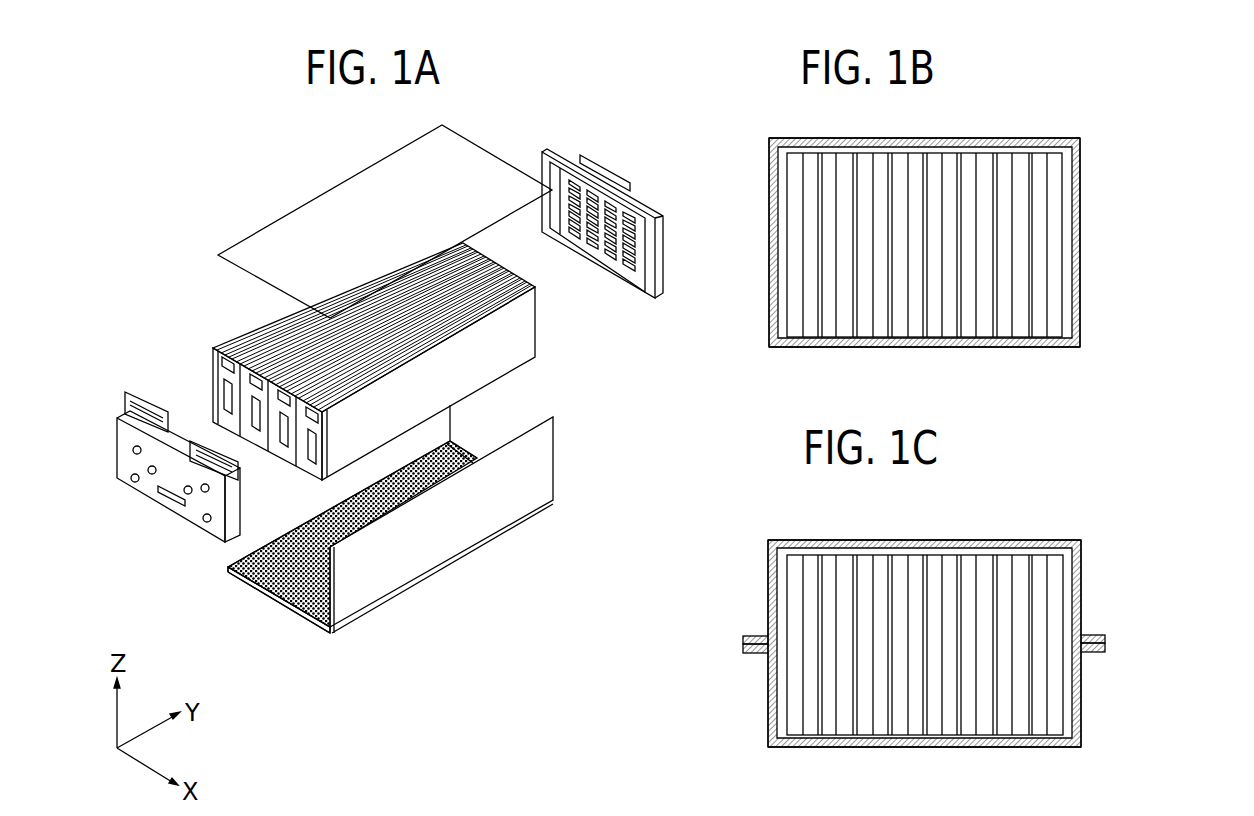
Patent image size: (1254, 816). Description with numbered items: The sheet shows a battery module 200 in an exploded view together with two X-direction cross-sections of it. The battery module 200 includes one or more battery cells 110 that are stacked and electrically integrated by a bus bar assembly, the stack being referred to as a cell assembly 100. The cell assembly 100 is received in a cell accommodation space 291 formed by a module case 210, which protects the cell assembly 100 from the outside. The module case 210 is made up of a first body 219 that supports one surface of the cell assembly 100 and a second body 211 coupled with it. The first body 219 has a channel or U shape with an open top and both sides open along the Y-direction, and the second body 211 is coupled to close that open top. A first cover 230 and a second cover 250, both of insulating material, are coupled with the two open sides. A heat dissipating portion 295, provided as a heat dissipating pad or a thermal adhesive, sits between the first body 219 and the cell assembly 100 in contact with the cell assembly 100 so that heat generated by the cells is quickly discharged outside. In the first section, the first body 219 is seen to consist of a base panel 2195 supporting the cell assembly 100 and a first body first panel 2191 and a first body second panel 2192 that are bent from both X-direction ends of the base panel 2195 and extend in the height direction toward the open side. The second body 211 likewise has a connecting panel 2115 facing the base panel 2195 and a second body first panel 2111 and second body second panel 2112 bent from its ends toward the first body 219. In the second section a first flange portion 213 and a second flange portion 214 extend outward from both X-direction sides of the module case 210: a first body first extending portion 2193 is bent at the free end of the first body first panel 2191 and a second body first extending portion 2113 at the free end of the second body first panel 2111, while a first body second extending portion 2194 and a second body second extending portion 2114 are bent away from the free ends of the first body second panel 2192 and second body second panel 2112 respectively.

In FIG. 1A, the cell assembly 100 is at (230, 314).
In FIG. 1A, the battery cells 110 is at (470, 305).
In FIG. 1A, the battery module 200 is at (202, 128).
In FIG. 1B, the module case 210 is at (1173, 145).
In FIG. 1A, the second body 211 is at (350, 197).
In FIG. 1B, the second body 211 is at (1011, 134).
In FIG. 1A, the first body 219 is at (239, 584).
In FIG. 1B, the first body 219 is at (1011, 351).
In FIG. 1A, the first cover 230 is at (166, 478).
In FIG. 1A, the second cover 250 is at (592, 172).
In FIG. 1A, the cell accommodation space 291 is at (400, 488).
In FIG. 1A, the heat dissipating portion 295 is at (288, 587).
In FIG. 1B, the first body first panel 2191 is at (769, 240).
In FIG. 1C, the first body first panel 2191 is at (768, 694).
In FIG. 1B, the first body second panel 2192 is at (1080, 240).
In FIG. 1C, the first body second panel 2192 is at (1081, 694).
In FIG. 1C, the second body first panel 2111 is at (768, 577).
In FIG. 1C, the second body second panel 2112 is at (1081, 578).
In FIG. 1C, the second body first extending portion 2113 is at (745, 637).
In FIG. 1C, the first body first extending portion 2193 is at (745, 651).
In FIG. 1C, the first flange portion 213 is at (675, 615).
In FIG. 1C, the second body second extending portion 2114 is at (1105, 638).
In FIG. 1C, the first body second extending portion 2194 is at (1105, 650).
In FIG. 1C, the second flange portion 214 is at (1175, 613).
In FIG. 1C, the connecting panel 2115 is at (937, 540).
In FIG. 1C, the base panel 2195 is at (913, 748).